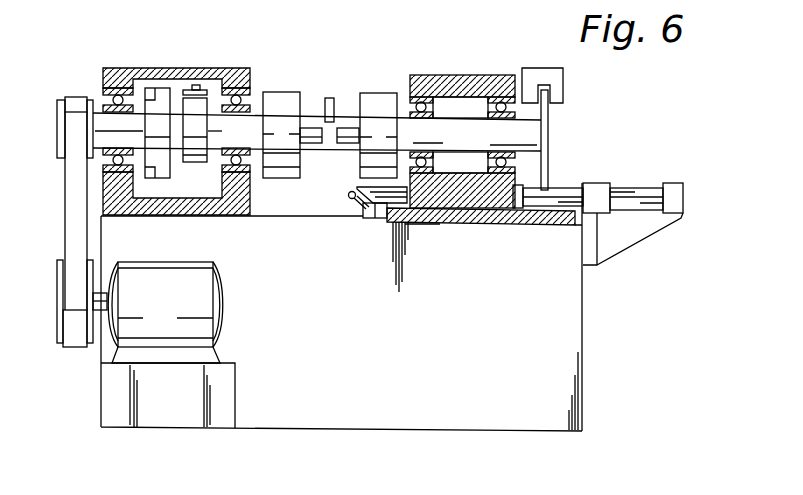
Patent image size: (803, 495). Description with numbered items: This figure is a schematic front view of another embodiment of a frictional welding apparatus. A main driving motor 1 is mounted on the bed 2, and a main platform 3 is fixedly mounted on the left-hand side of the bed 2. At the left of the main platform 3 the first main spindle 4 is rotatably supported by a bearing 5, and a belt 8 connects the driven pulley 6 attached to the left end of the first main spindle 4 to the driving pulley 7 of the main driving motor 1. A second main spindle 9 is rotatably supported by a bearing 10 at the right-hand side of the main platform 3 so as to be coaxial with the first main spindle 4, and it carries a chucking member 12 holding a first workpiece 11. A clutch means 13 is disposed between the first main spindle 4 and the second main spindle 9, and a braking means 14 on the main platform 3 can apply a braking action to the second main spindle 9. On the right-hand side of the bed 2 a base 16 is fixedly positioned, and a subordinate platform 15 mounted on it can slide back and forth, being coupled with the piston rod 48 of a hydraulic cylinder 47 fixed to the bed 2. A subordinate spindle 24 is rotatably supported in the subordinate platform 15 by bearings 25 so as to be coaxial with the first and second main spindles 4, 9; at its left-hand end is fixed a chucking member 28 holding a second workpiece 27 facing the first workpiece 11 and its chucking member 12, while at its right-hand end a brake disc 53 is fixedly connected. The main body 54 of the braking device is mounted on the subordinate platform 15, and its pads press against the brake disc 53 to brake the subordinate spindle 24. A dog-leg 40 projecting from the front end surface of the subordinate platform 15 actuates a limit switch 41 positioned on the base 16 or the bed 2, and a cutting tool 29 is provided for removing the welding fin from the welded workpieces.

The main driving motor 1 is at (222, 310).
The bed 2 is at (573, 317).
The main platform 3 is at (230, 213).
The first main spindle 4 is at (101, 113).
The bearing 5 is at (120, 96).
The driven pulley 6 is at (58, 112).
The driving pulley 7 is at (56, 325).
The belt 8 is at (78, 230).
The second main spindle 9 is at (213, 113).
The bearing 10 is at (250, 93).
The first workpiece 11 is at (312, 145).
The chucking member 12 is at (283, 98).
The clutch means 13 is at (155, 89).
The braking means 14 is at (192, 86).
The subordinate platform 15 is at (463, 211).
The base 16 is at (423, 224).
The subordinate spindle 24 is at (458, 130).
The bearings 25 is at (417, 95).
The second workpiece 27 is at (348, 128).
The chucking member 28 is at (380, 100).
The cutting tool 29 is at (329, 98).
The dog-leg 40 is at (380, 200).
The limit switch 41 is at (362, 210).
The hydraulic cylinder 47 is at (637, 190).
The piston rod 48 is at (565, 187).
The brake disc 53 is at (548, 115).
The main body of the braking device 54 is at (545, 68).